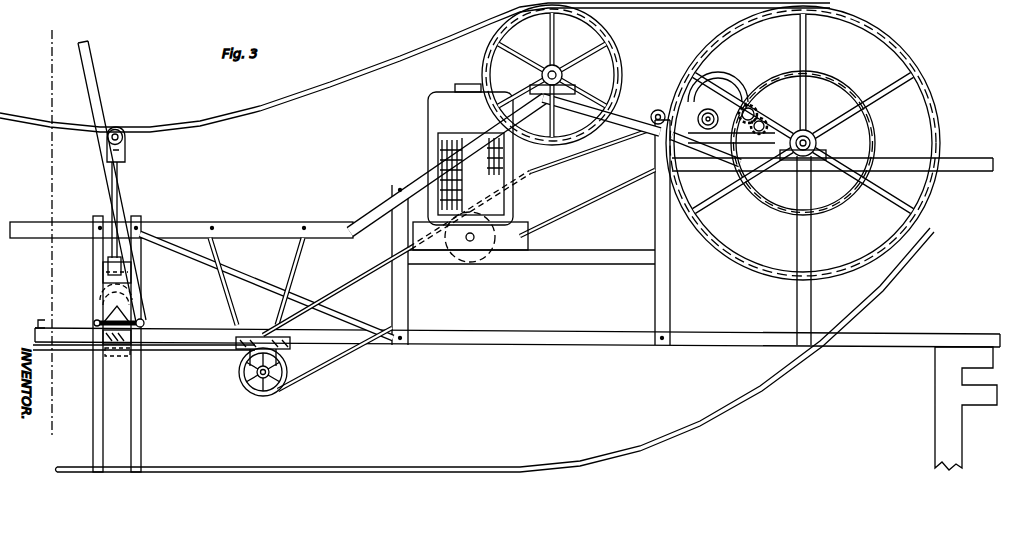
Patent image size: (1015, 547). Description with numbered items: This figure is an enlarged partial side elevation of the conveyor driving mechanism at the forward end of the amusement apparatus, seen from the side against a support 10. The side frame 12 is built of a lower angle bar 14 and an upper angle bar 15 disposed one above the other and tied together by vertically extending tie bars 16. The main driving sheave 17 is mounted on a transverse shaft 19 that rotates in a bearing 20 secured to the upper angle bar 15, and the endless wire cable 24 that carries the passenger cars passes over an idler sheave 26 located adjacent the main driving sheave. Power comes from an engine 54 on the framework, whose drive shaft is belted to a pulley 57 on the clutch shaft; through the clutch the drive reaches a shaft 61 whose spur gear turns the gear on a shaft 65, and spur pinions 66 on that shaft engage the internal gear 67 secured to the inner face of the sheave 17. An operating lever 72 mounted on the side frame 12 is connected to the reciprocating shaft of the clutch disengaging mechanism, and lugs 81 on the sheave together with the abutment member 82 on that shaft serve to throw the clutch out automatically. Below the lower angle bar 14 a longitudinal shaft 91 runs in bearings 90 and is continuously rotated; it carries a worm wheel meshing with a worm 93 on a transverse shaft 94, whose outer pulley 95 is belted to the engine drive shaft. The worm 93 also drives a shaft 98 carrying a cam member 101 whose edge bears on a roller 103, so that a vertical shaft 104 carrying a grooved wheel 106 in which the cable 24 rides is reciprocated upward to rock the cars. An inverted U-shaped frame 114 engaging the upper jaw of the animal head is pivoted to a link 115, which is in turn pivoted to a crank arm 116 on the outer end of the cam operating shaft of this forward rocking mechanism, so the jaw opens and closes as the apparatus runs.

The wall support 10 is at (935, 438).
The side frame 12 is at (449, 348).
The lower angle bar 14 is at (42, 328).
The upper angle bar 15 is at (46, 33).
The tie bar 16 is at (141, 418).
The main driving sheave 17 is at (898, 58).
The shaft 19 is at (800, 165).
The bearing 20 is at (822, 146).
The endless wire cable 24 is at (267, 112).
The idler sheave 26 is at (606, 33).
The engine 54 is at (420, 115).
The pulley 57 is at (718, 84).
The shaft 61 is at (712, 112).
The shaft 65 is at (764, 123).
The spur pinion 66 is at (756, 110).
The internal gear 67 is at (840, 84).
The operating lever 72 is at (714, 56).
The lug 81 is at (660, 140).
The abutment member 82 is at (658, 110).
The bearing 90 is at (108, 358).
The longitudinal shaft 91 is at (193, 351).
The worm 93 is at (104, 352).
The transverse shaft 94 is at (272, 371).
The pulley 95 is at (283, 380).
The shaft 98 is at (130, 308).
The cam member 101 is at (128, 296).
The roller 103 is at (103, 280).
The vertical shaft 104 is at (121, 178).
The grooved wheel 106 is at (126, 139).
The inverted U-shaped frame 114 is at (94, 98).
The link 115 is at (143, 322).
The crank arm 116 is at (104, 318).